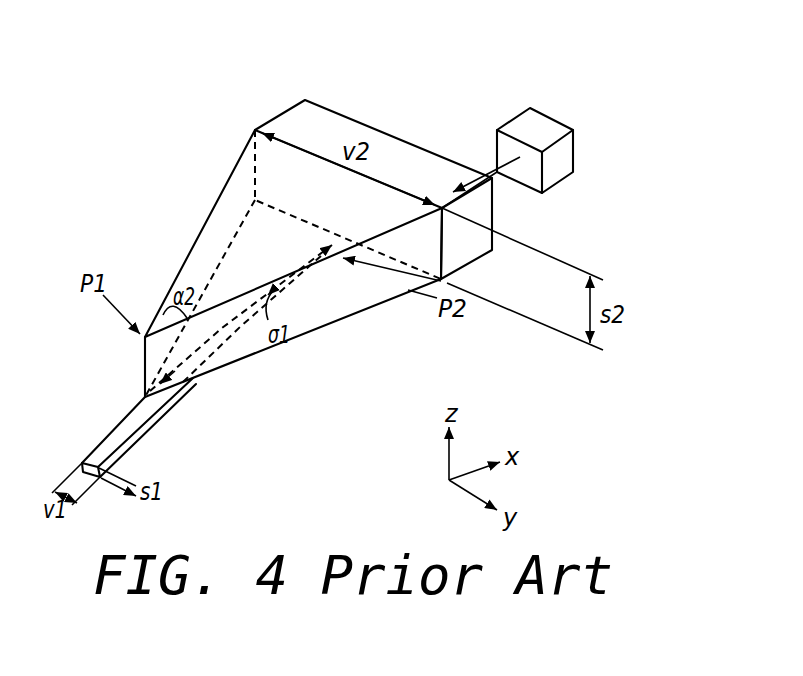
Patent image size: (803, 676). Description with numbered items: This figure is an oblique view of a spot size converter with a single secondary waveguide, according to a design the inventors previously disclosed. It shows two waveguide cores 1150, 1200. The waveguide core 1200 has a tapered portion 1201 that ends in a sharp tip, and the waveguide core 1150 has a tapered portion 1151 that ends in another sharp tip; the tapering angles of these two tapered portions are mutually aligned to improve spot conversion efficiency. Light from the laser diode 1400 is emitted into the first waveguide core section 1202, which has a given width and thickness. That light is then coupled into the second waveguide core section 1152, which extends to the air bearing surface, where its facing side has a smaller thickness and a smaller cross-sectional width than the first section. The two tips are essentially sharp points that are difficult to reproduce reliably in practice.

The waveguide core 1200 is at (318, 216).
The tapered portion 1201 is at (220, 222).
The first waveguide core section 1202 is at (277, 127).
The laser diode 1400 is at (563, 157).
The waveguide core 1150 is at (214, 409).
The tapered portion 1151 is at (237, 342).
The second waveguide core section 1152 is at (170, 403).